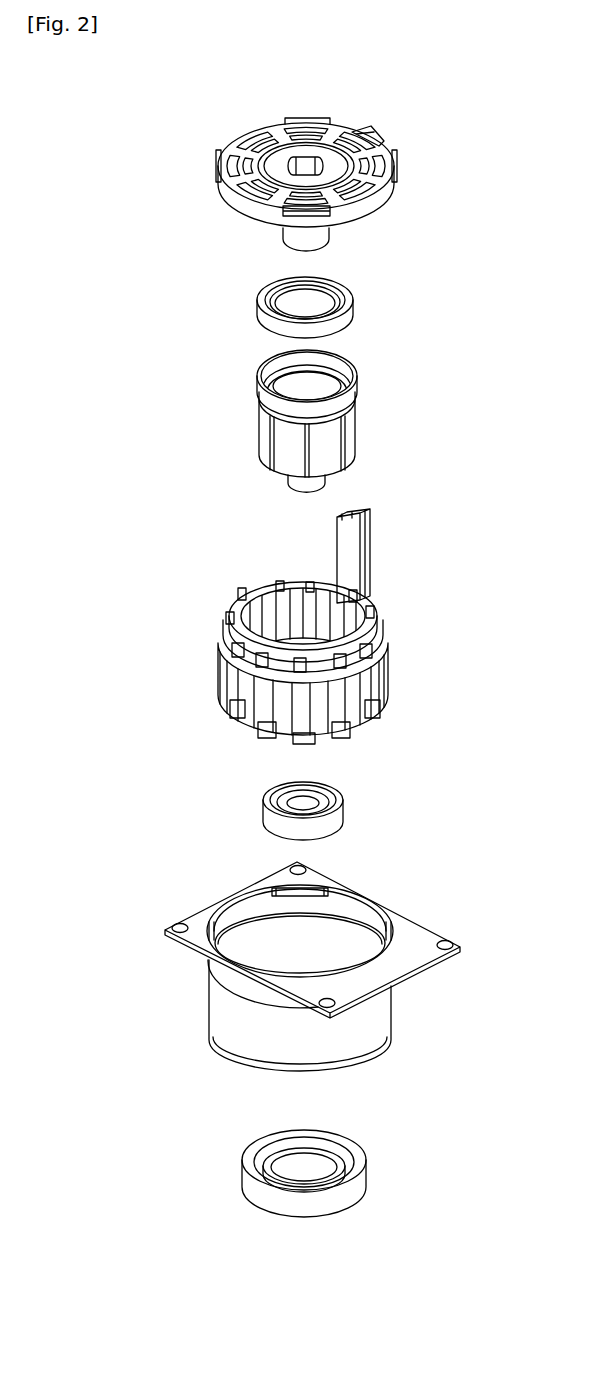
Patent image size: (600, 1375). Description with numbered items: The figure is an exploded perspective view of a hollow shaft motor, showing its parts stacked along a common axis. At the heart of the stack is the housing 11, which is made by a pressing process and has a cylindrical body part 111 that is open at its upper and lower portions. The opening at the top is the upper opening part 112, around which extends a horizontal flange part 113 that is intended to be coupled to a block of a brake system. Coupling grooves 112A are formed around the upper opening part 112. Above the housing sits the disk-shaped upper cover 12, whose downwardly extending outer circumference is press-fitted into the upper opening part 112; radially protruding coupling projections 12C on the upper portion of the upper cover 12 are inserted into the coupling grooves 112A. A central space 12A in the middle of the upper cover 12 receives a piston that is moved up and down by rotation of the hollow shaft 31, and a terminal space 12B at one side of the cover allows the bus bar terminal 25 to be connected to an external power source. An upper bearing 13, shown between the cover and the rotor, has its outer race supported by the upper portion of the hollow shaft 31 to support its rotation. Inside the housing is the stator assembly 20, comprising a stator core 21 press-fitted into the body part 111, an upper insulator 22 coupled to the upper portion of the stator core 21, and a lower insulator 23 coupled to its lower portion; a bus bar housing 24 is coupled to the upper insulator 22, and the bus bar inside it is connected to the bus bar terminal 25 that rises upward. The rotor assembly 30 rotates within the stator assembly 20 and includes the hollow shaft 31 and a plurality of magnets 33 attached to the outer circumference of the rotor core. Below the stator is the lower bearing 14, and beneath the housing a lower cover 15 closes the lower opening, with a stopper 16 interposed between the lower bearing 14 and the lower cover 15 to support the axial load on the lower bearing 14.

The housing 11 is at (280, 953).
The body part 111 is at (383, 1018).
The upper opening part 112 is at (368, 906).
The coupling grooves 112A is at (212, 925).
The flange part 113 is at (430, 932).
The upper cover 12 is at (292, 161).
The central space 12A is at (304, 167).
The terminal space 12B is at (364, 140).
The coupling projections 12C is at (305, 214).
The upper bearing 13 is at (356, 294).
The lower bearing 14 is at (345, 811).
The lower cover 15 is at (331, 1154).
The stopper 16 is at (332, 1152).
The stator assembly 20 is at (288, 634).
The stator core 21 is at (388, 673).
The upper insulator 22 is at (233, 646).
The lower insulator 23 is at (340, 740).
The bus bar housing 24 is at (276, 586).
The bus bar terminal 25 is at (366, 561).
The rotor assembly 30 is at (284, 417).
The hollow shaft 31 is at (356, 367).
The magnets 33 is at (352, 442).